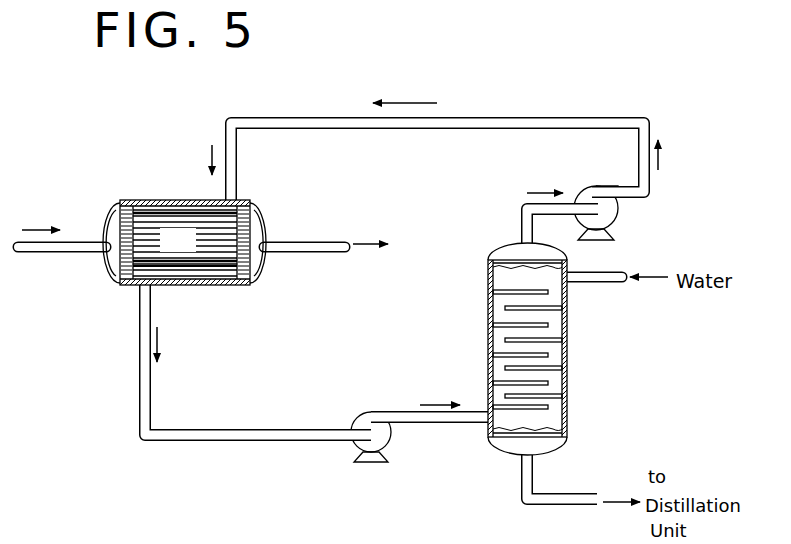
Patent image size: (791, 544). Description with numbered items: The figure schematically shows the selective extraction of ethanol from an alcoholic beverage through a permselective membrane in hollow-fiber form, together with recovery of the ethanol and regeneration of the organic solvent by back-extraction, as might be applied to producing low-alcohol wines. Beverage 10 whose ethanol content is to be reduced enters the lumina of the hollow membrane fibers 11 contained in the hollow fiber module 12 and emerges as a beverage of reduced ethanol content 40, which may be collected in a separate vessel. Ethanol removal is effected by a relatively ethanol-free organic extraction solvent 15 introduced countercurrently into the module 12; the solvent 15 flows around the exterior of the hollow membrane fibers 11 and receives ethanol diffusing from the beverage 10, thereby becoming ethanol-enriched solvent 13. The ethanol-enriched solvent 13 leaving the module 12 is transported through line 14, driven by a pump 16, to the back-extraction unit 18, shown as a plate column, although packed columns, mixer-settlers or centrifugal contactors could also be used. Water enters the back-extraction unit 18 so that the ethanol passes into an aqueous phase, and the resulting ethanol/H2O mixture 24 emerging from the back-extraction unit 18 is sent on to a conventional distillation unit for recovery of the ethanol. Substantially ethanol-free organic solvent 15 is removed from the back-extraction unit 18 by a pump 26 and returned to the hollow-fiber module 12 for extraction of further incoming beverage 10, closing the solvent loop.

The beverage 10 is at (52, 253).
The hollow membrane fibers 11 is at (190, 251).
The hollow fiber module 12 is at (160, 198).
The ethanol-enriched solvent 13 is at (186, 270).
The line 14 is at (140, 369).
The organic extraction solvent 15 is at (237, 163).
The pump 16 is at (364, 412).
The back-extraction unit 18 is at (485, 340).
The ethanol/H2O mixture 24 is at (578, 506).
The pump 26 is at (601, 190).
The beverage of reduced ethanol content 40 is at (296, 246).